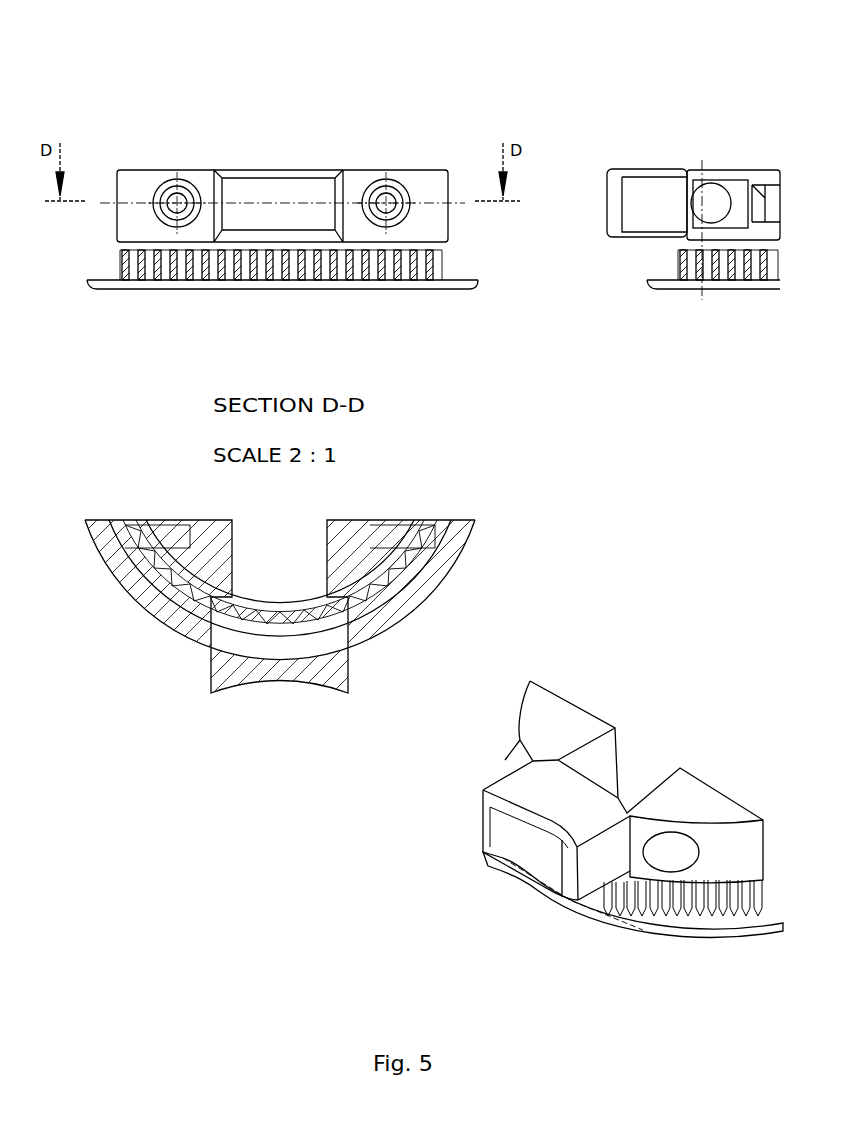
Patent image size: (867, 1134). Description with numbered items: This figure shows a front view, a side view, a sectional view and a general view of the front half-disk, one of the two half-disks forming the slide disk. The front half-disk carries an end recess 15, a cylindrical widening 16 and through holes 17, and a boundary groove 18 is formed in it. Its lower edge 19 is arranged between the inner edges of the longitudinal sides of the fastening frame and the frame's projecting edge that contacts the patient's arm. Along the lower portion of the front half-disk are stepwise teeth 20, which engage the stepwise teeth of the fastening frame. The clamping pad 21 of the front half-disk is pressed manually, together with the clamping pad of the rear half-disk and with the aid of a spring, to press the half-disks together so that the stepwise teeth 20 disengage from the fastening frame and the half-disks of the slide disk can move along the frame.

The end recess 15 is at (597, 757).
The cylindrical widening 16 is at (160, 176).
The through holes 17 is at (394, 176).
The boundary groove 18 is at (157, 290).
The lower edge 19 is at (457, 291).
The stepwise teeth 20 is at (757, 279).
The clamping pad 21 is at (608, 170).